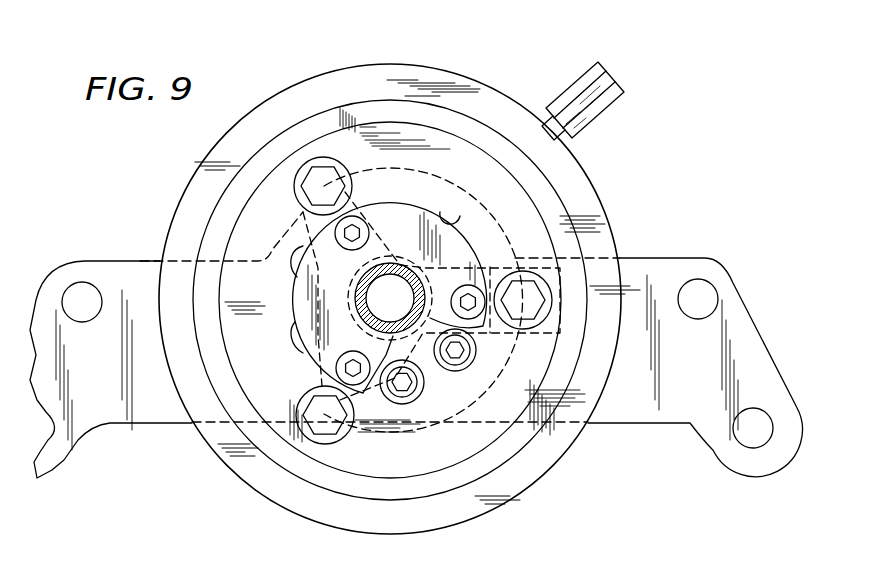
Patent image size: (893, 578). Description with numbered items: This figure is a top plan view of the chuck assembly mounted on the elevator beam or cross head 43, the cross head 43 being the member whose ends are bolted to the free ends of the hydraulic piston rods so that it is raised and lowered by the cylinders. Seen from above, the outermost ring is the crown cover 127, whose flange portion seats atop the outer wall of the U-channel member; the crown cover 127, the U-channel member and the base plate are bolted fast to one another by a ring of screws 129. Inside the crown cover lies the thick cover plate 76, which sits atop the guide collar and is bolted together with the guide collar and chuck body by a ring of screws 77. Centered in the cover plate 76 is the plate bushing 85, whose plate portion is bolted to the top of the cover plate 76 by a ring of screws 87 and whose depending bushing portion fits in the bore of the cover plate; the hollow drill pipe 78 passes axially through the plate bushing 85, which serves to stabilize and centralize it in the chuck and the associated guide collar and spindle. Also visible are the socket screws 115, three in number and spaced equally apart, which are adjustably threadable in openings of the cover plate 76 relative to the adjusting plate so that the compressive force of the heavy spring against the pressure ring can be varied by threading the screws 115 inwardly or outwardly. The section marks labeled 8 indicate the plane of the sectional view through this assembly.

The elevator beam or cross head 43 is at (705, 258).
The cover plate 76 is at (444, 468).
The ring of screws 77 is at (416, 388).
The drill pipe 78 is at (412, 292).
The plate bushing 85 is at (449, 208).
The ring of screws 87 is at (335, 374).
The socket screws 115 is at (298, 173).
The crown cover 127 is at (603, 207).
The ring of screws 129 is at (512, 497).
The section line 8- 8 is at (617, 35).